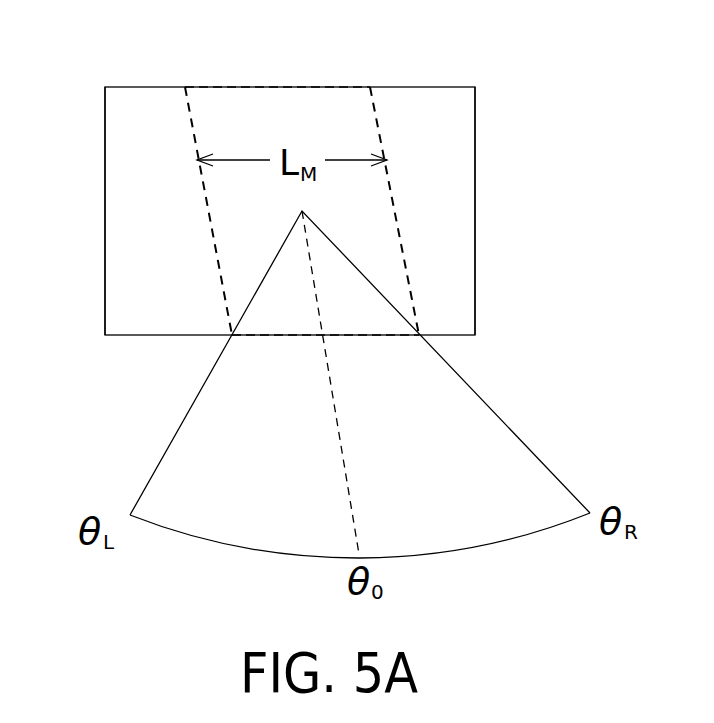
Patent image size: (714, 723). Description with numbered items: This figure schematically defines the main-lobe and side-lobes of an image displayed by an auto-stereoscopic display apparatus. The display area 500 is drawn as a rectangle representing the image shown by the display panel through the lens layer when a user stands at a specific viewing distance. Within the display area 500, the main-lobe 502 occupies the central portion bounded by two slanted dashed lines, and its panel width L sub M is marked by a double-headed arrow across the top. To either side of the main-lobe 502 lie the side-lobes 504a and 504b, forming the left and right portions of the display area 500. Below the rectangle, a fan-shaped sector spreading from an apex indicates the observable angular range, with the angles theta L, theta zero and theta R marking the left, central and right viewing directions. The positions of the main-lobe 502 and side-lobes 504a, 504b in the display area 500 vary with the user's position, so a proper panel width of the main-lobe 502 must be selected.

The display area 500 is at (138, 87).
The main-lobe 502 is at (280, 84).
The side-lobe 504a is at (113, 140).
The side-lobe 504b is at (466, 140).